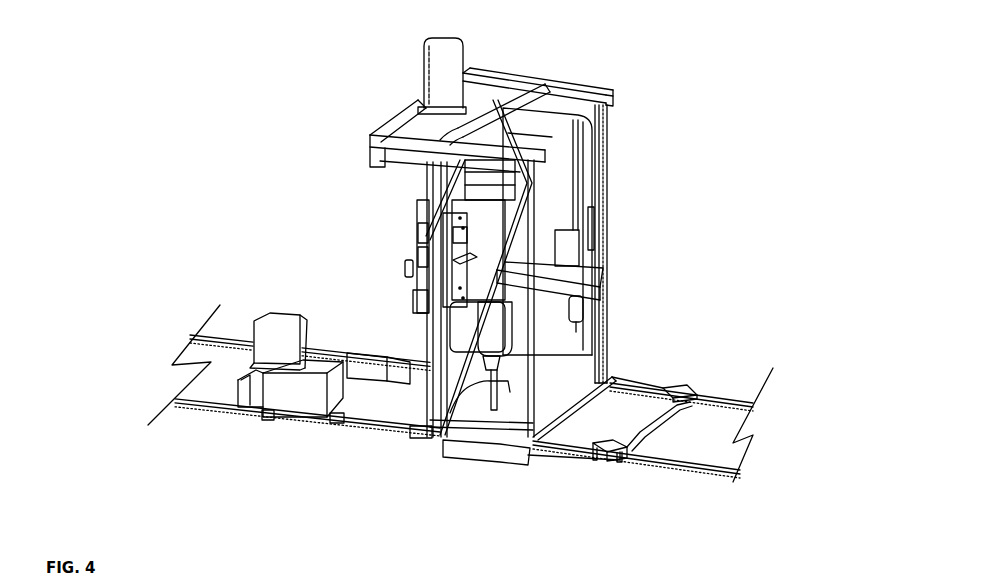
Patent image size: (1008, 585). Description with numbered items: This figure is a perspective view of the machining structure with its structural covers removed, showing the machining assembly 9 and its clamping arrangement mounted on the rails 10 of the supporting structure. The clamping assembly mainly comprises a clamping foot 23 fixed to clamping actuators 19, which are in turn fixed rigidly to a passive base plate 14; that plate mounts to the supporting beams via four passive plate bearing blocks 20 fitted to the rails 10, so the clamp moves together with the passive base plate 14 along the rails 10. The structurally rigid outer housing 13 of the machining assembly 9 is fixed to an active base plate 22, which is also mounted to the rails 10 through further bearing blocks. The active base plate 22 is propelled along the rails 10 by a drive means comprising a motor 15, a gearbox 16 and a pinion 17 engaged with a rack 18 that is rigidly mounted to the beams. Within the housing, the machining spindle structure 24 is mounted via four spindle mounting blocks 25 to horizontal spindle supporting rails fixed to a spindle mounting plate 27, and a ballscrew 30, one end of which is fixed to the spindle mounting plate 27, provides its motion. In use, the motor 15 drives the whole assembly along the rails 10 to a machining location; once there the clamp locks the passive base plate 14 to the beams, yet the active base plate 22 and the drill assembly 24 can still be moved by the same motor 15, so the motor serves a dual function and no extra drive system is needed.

The machining assembly 9 is at (407, 239).
The rails 10 is at (517, 356).
The outer housing 13 is at (596, 79).
The passive base plate 14 is at (716, 311).
The motor 15 is at (197, 303).
The gearbox 16 is at (215, 355).
The pinion 17 is at (191, 439).
The rack 18 is at (261, 445).
The clamping actuators 19 is at (330, 464).
The passive plate bearing blocks 20 is at (599, 461).
The active base plate 22 is at (408, 393).
The clamping foot 23 is at (484, 482).
The machining spindle structure 24 is at (628, 261).
The spindle mounting blocks 25 is at (443, 300).
The spindle mounting plate 27 is at (365, 260).
The ballscrew 30 is at (348, 256).